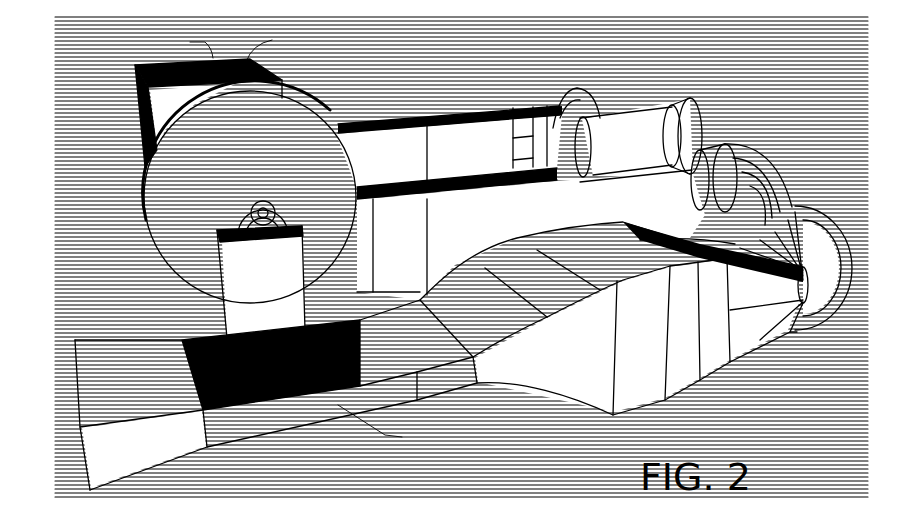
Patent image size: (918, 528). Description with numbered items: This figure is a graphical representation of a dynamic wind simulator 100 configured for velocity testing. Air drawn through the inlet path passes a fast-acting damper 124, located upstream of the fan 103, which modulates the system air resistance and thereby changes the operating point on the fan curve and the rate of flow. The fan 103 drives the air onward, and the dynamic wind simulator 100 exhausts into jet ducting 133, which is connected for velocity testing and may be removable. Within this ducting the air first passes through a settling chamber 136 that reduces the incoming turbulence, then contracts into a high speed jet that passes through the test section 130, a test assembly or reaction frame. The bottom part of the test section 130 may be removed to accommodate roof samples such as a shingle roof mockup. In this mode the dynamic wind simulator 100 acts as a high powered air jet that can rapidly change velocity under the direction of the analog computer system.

The dynamic wind simulator 100 is at (622, 66).
The fan 103 is at (260, 158).
The fast-acting damper 124 is at (511, 107).
The test section 130 is at (439, 356).
The jet ducting 133 is at (742, 369).
The settling chamber 136 is at (633, 396).